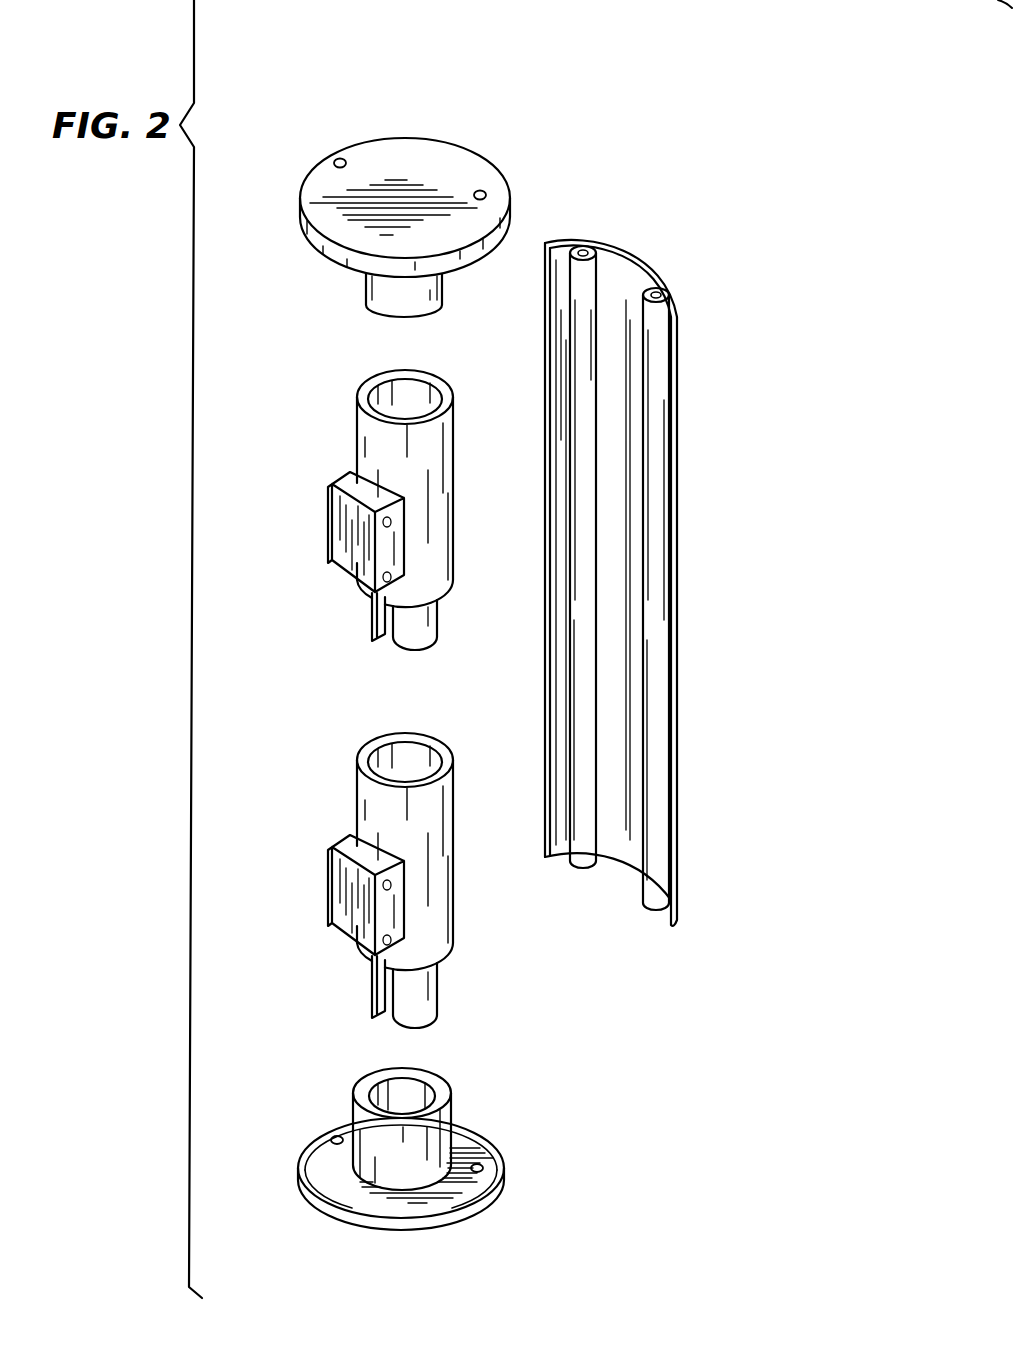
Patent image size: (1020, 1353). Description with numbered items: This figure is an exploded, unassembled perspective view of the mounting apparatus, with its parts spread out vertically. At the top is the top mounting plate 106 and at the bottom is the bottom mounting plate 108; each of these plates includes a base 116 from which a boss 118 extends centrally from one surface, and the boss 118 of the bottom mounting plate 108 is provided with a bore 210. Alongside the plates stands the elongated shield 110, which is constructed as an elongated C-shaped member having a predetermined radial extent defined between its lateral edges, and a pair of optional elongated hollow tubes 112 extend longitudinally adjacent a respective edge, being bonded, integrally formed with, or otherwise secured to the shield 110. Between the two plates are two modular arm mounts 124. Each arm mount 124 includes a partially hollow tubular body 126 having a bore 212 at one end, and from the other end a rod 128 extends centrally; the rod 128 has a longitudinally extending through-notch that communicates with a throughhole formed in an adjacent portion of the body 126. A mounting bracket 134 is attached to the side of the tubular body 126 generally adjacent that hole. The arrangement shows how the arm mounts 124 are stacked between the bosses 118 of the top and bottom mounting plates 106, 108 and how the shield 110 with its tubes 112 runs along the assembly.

The top mounting plate 106 is at (507, 201).
The bottom mounting plate 108 is at (378, 1176).
The elongated shield 110 is at (312, 255).
The elongated hollow tubes 112 is at (655, 305).
The base 116 is at (310, 1146).
The boss 118 is at (428, 308).
The modular arm mount 124 is at (404, 677).
The tubular body 126 is at (453, 481).
The rod 128 is at (372, 622).
The mounting bracket 134 is at (327, 527).
The bore 210 is at (410, 1095).
The bore 212 is at (403, 390).